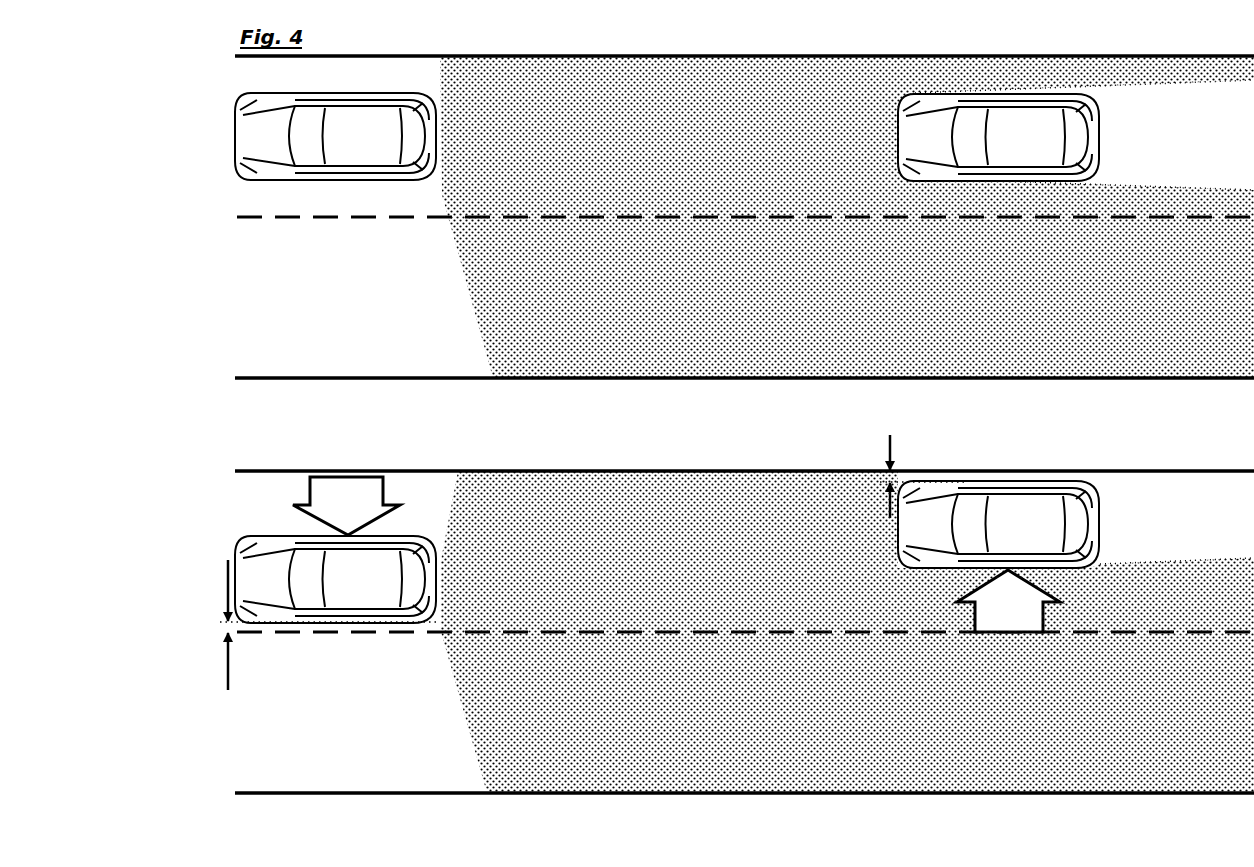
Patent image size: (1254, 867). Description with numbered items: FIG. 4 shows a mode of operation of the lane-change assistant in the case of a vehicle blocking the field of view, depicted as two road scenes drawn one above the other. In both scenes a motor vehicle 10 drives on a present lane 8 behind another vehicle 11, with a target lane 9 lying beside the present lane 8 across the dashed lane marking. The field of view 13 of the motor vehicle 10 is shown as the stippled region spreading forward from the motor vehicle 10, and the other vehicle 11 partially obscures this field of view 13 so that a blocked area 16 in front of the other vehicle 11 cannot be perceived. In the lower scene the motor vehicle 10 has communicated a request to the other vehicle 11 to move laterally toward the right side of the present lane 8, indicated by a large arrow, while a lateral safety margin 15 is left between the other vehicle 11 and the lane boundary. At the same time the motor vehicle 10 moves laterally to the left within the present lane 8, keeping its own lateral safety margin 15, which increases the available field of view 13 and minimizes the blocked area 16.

The present lane 8 is at (399, 91).
The target lane 9 is at (369, 332).
The motor vehicle 10 is at (236, 117).
The other vehicle 11 is at (896, 115).
The field of view 13 is at (699, 142).
The lateral safety margin 15 is at (224, 633).
The blocked area 16 is at (1156, 150).